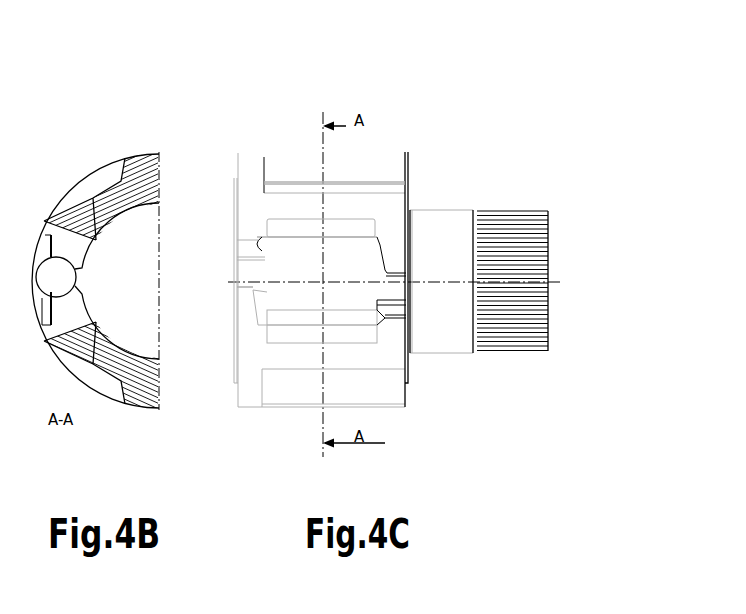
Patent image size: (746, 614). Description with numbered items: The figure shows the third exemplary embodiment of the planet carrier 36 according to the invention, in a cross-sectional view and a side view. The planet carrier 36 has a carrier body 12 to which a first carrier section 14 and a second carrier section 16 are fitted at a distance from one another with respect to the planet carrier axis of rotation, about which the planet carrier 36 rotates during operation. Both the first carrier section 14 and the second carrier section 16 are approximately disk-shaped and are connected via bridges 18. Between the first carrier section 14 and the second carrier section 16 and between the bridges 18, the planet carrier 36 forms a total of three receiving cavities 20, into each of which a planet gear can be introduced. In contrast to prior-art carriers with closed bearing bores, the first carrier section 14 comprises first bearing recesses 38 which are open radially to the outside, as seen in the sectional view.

In FIG. 4B, the planet carrier 36 is at (62, 102).
In FIG. 4C, the planet carrier 36 is at (260, 103).
In FIG. 4B, the first bearing recess 38 is at (50, 279).
In FIG. 4B, the first carrier section 14 is at (78, 292).
In FIG. 4C, the first carrier section 14 is at (251, 388).
In FIG. 4C, the receiving cavity 20 is at (340, 262).
In FIG. 4C, the carrier body 12 is at (363, 207).
In FIG. 4C, the bridge 18 is at (363, 207).
In FIG. 4C, the second carrier section 16 is at (403, 357).